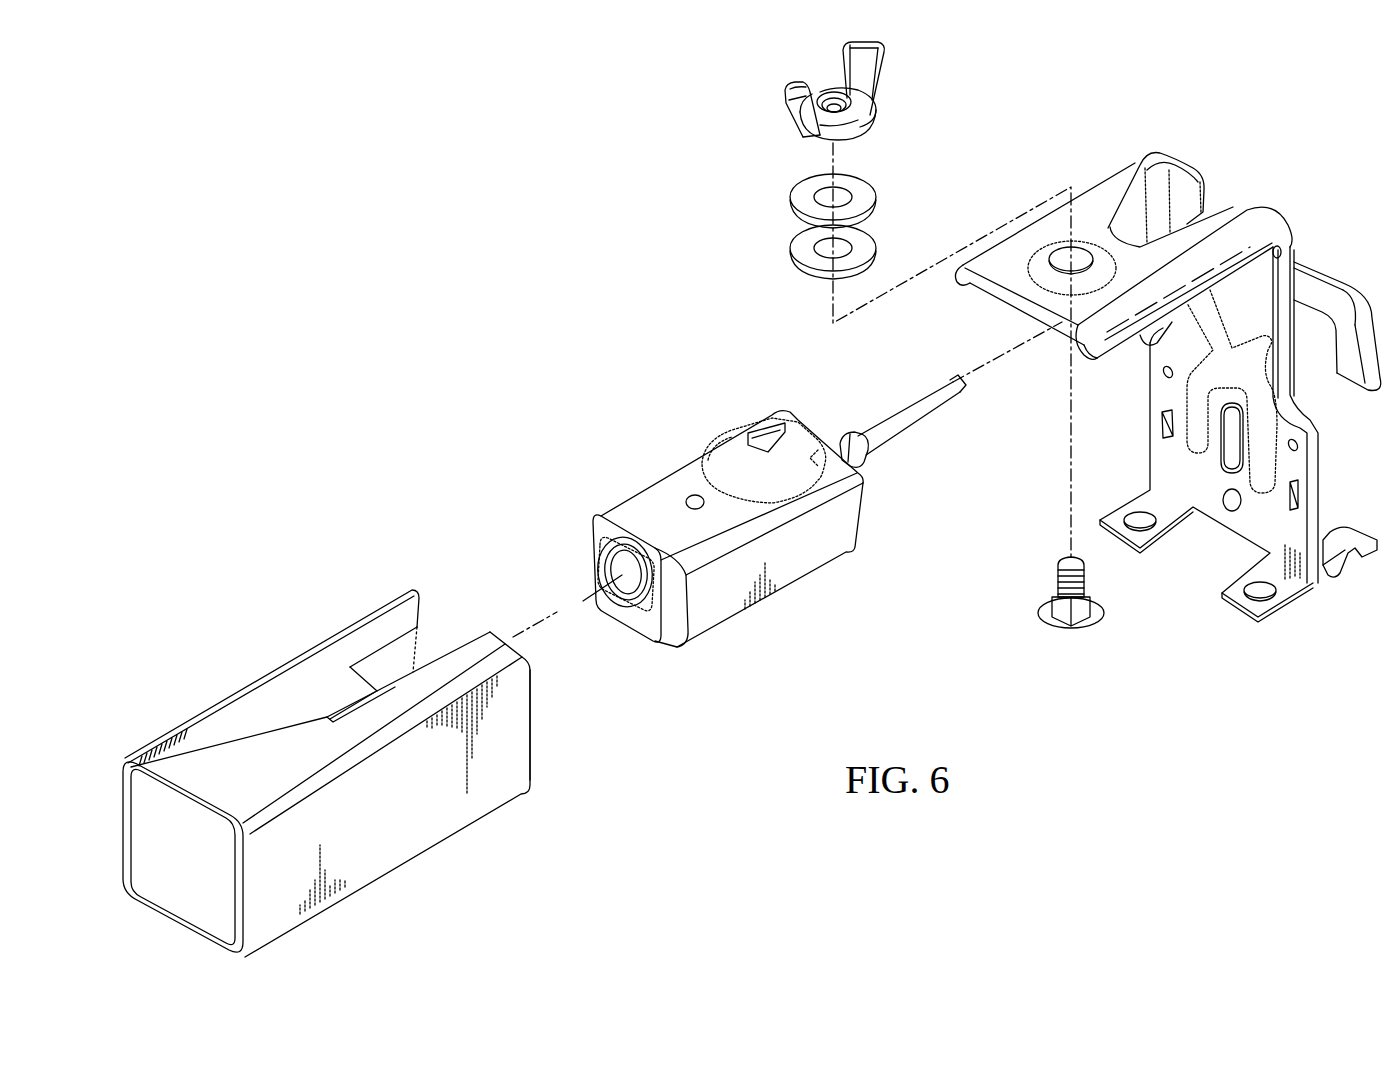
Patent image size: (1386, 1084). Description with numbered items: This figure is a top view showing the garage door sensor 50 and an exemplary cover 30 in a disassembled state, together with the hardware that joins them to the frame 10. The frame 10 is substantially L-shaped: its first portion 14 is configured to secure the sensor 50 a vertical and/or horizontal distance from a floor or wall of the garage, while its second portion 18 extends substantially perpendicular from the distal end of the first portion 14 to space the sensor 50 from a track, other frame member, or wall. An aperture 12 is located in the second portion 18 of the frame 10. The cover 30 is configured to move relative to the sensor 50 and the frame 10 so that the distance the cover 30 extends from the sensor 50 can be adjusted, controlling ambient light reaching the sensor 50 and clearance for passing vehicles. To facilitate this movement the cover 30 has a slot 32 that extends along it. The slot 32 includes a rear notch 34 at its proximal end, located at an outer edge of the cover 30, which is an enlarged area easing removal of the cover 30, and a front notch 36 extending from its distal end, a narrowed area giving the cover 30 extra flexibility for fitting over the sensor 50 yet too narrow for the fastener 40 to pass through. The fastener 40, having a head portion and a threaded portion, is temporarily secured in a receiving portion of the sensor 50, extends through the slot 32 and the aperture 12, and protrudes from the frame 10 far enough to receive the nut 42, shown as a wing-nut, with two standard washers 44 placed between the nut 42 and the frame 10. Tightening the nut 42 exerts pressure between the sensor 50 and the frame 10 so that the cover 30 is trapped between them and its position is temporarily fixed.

The frame 10 is at (1167, 375).
The aperture 12 is at (1042, 268).
The first portion 14 is at (1157, 453).
The second portion 18 is at (1123, 243).
The cover 30 is at (326, 758).
The slot 32 is at (388, 664).
The rear notch 34 is at (447, 616).
The front notch 36 is at (341, 694).
The fastener 40 is at (1082, 630).
The nut 42 is at (884, 73).
The washer 44 is at (790, 202).
The garage door sensor 50 is at (648, 479).